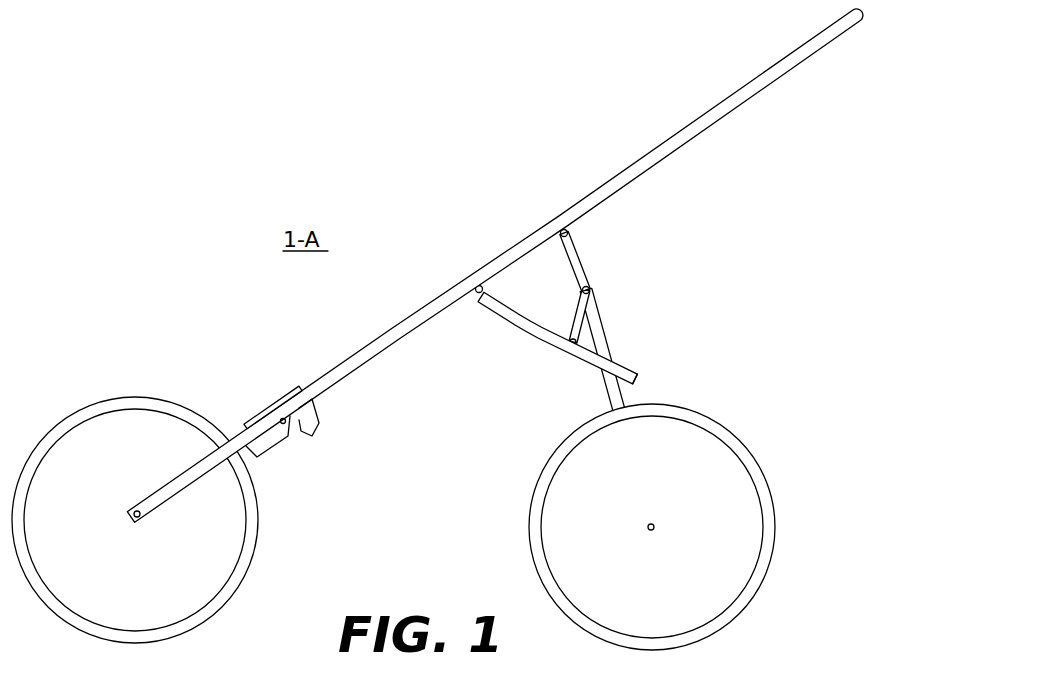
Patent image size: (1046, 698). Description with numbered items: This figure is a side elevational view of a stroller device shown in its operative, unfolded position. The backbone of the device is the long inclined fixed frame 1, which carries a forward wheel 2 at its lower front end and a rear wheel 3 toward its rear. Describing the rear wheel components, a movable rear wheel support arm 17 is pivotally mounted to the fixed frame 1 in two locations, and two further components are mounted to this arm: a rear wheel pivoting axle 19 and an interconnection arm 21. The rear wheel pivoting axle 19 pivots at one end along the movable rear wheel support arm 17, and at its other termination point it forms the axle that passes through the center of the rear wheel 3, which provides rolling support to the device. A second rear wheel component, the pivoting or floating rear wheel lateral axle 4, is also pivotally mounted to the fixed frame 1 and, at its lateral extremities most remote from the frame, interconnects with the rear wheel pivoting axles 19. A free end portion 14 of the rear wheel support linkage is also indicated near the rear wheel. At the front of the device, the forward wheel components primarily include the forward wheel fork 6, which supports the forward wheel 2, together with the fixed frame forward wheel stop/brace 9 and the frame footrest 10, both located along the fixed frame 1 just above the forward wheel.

The fixed frame 1 is at (672, 131).
The forward wheel 2 is at (241, 588).
The rear wheel 3 is at (763, 583).
The pivoting (floating) rear wheel lateral axle 4 is at (578, 240).
The forward wheel fork 6 is at (263, 450).
The fixed frame forward wheel stop/brace 9 is at (257, 412).
The frame footrest 10 is at (320, 437).
The tube end 14 is at (642, 383).
The movable rear wheel support arm 17 is at (507, 326).
The rear wheel pivoting axle 19 is at (598, 398).
The interconnection arm 21 is at (572, 312).